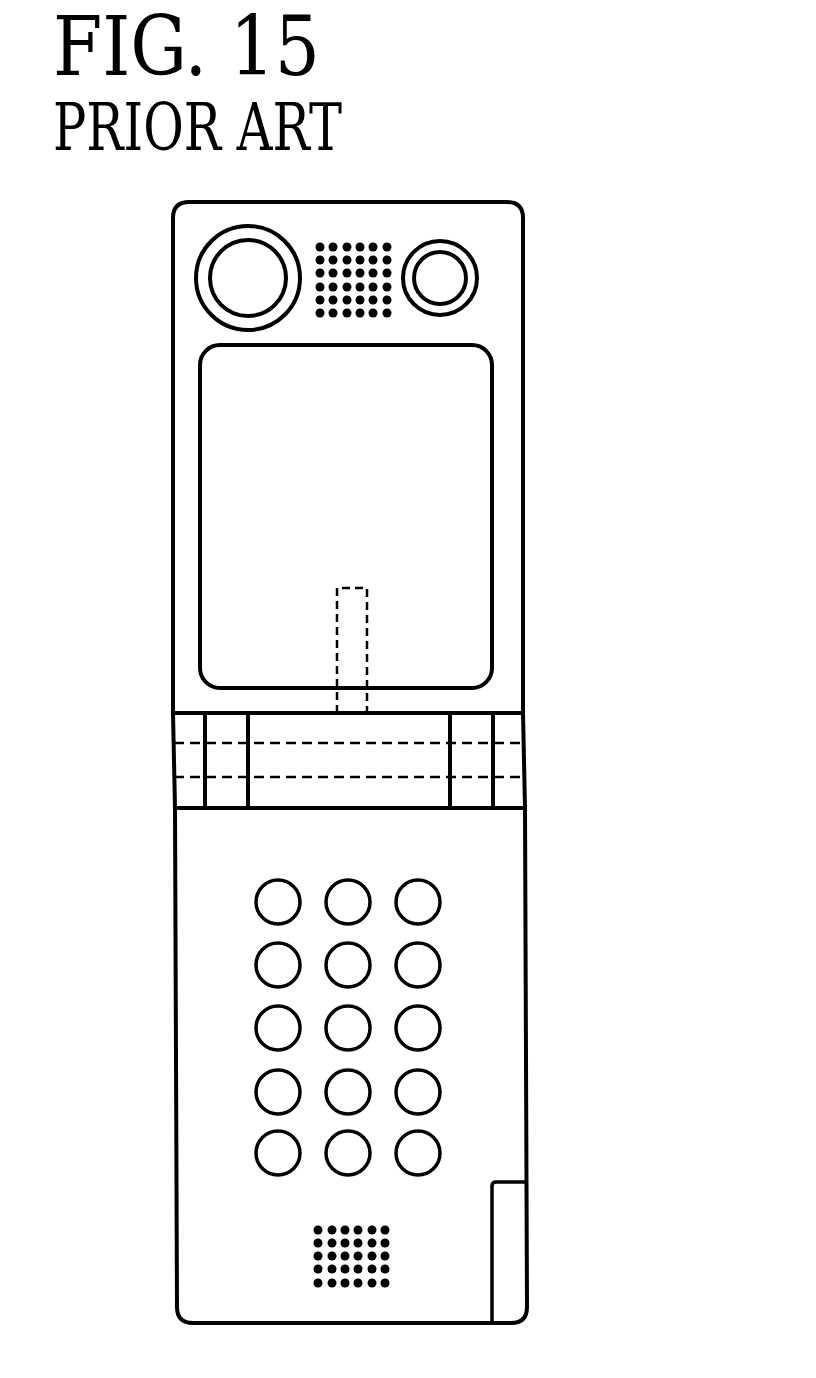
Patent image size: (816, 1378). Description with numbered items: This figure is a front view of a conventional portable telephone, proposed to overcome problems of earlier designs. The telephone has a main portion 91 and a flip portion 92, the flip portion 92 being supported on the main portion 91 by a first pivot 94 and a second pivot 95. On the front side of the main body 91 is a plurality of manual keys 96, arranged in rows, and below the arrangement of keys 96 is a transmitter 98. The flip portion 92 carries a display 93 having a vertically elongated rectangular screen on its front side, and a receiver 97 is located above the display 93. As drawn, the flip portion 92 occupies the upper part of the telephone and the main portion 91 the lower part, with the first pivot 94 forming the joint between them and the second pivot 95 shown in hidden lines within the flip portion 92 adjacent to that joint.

The main portion 91 is at (498, 945).
The flip portion 92 is at (508, 585).
The display 93 is at (468, 510).
The first pivot 94 is at (525, 763).
The second pivot 95 is at (367, 647).
The manual keys 96 is at (437, 1090).
The receiver 97 is at (373, 297).
The transmitter 98 is at (317, 1252).